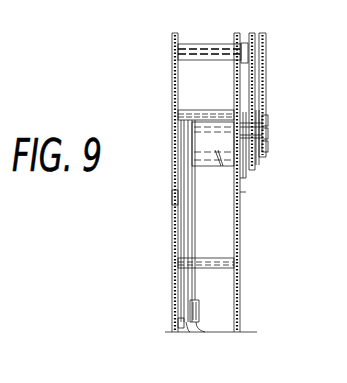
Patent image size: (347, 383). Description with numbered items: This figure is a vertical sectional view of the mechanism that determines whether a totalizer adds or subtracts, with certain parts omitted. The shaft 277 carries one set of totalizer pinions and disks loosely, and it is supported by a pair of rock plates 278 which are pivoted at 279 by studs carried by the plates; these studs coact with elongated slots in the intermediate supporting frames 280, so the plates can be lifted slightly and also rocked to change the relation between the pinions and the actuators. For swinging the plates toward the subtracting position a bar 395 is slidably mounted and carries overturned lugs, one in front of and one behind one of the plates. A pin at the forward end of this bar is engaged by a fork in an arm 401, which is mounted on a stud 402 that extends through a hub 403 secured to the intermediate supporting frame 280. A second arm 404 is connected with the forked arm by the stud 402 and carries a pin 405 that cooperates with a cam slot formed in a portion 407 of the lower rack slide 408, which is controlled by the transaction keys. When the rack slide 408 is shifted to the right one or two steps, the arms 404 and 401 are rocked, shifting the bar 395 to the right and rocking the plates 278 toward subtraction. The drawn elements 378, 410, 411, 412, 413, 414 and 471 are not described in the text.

The shaft 277 is at (186, 112).
The rock plates 278 is at (172, 289).
The pivot studs 279 is at (172, 104).
The intermediate supporting frames 280 is at (172, 222).
The bottom fitting 378 is at (200, 327).
The bar 395 is at (180, 328).
The forked arm 401 is at (172, 200).
The stud 402 is at (241, 197).
The hub 403 is at (224, 160).
The arm 404 is at (258, 162).
The pin 405 is at (268, 119).
The portion of the lower rack slide 407 is at (268, 150).
The lower rack slide 408 is at (262, 84).
The cable 410 is at (246, 162).
The middle block 411 is at (268, 135).
The rods 412 is at (194, 206).
The link 413 is at (242, 184).
The lead 414 is at (188, 335).
The upper guide 471 is at (251, 35).